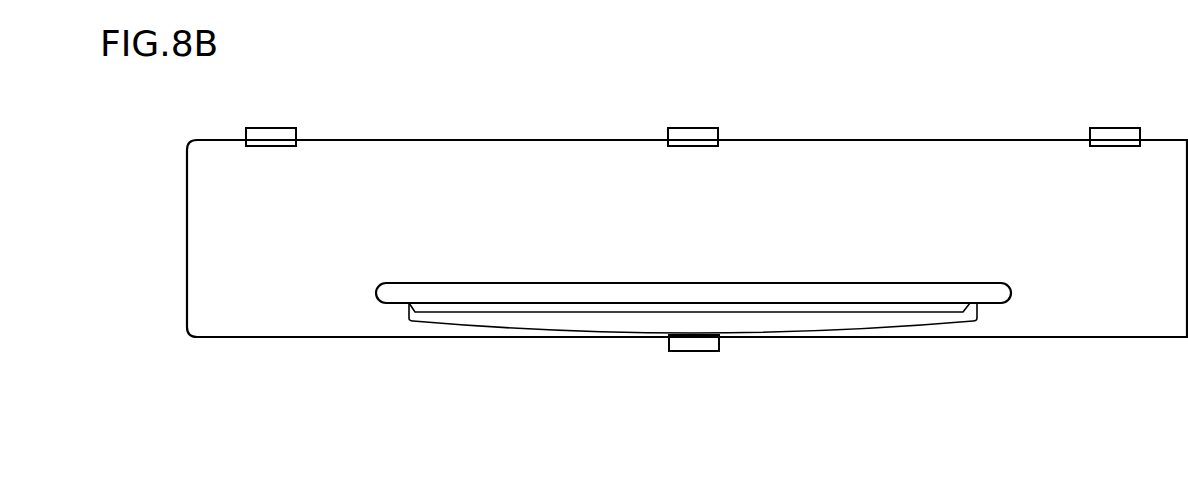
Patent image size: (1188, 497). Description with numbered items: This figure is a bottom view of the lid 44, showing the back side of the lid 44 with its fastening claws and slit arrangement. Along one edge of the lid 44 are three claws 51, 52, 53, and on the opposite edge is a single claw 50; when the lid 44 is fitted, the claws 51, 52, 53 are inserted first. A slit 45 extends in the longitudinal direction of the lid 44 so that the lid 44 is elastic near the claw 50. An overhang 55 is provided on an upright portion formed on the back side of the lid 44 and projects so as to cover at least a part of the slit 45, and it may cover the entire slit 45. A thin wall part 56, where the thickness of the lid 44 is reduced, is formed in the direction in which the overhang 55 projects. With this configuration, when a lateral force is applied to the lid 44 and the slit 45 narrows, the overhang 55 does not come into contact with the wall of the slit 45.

The lid 44 is at (710, 417).
The slit 45 is at (955, 309).
The claw 50 is at (719, 343).
The claw 51 is at (273, 136).
The claw 52 is at (697, 136).
The claw 53 is at (1118, 136).
The overhang 55 is at (985, 291).
The thin wall part 56 is at (871, 323).